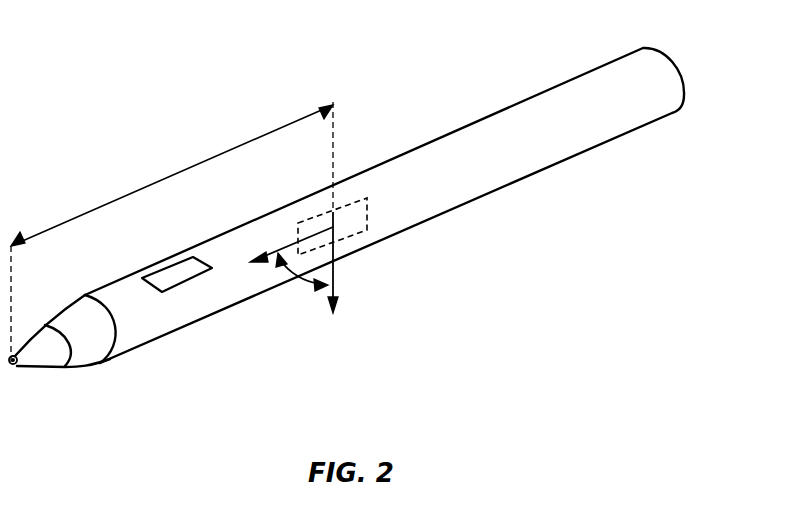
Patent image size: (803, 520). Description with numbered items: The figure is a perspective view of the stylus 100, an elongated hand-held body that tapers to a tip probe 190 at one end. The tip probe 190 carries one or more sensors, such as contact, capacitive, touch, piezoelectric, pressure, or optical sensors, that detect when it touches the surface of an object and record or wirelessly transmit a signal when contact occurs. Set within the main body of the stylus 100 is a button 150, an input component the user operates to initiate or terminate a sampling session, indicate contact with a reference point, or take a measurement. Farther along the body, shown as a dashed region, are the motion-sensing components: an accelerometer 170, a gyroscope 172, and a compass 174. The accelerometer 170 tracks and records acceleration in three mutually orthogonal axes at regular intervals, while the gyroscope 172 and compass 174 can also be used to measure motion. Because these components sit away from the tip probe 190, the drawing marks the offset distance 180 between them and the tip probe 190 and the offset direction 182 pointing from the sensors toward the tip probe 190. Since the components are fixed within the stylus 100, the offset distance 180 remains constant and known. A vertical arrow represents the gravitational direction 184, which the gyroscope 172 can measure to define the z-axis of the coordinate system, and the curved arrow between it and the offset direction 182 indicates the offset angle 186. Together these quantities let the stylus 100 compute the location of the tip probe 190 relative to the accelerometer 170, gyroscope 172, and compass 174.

The stylus 100 is at (75, 88).
The button 150 is at (173, 270).
The accelerometer 170 is at (366, 161).
The gyroscope 172 is at (332, 226).
The compass 174 is at (362, 197).
The offset distance 180 is at (183, 175).
The offset direction 182 is at (293, 248).
The gravitational direction 184 is at (338, 272).
The offset angle 186 is at (297, 282).
The tip probe 190 is at (14, 367).